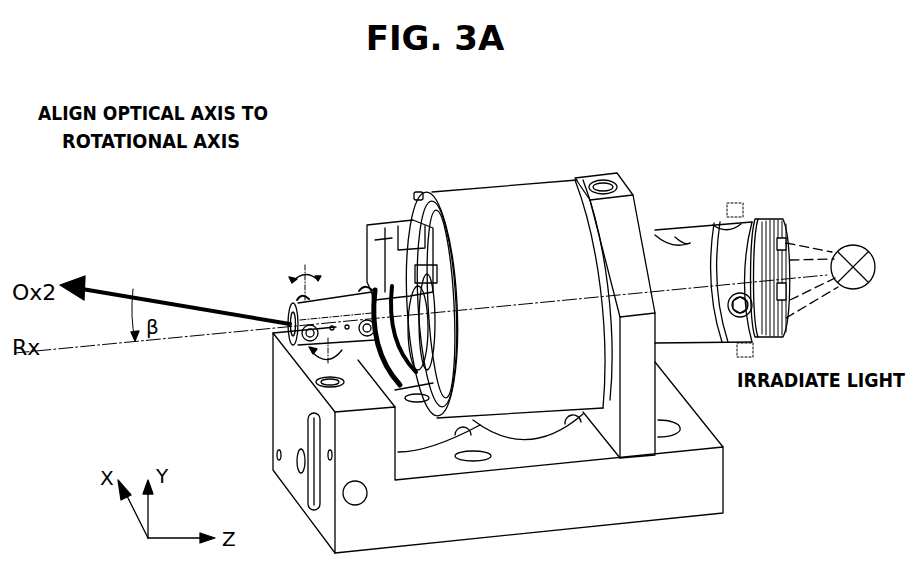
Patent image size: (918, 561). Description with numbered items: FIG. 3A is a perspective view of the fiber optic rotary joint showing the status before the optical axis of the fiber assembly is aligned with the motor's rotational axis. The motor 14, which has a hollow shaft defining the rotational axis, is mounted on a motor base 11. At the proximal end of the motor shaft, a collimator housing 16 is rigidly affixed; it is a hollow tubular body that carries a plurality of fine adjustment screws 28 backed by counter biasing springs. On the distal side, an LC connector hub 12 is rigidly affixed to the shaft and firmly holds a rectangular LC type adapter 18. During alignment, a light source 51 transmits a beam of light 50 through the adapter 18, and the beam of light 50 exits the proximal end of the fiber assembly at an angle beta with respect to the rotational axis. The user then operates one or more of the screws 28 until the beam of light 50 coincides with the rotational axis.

The motor base 11 is at (697, 475).
The LC connector hub 12 is at (737, 243).
The motor 14 is at (525, 235).
The collimator housing 16 is at (343, 308).
The LC type adapter 18 is at (773, 225).
The fine adjustment screws 28 is at (362, 288).
The beam of light 50 is at (115, 288).
The light source 51 is at (850, 245).